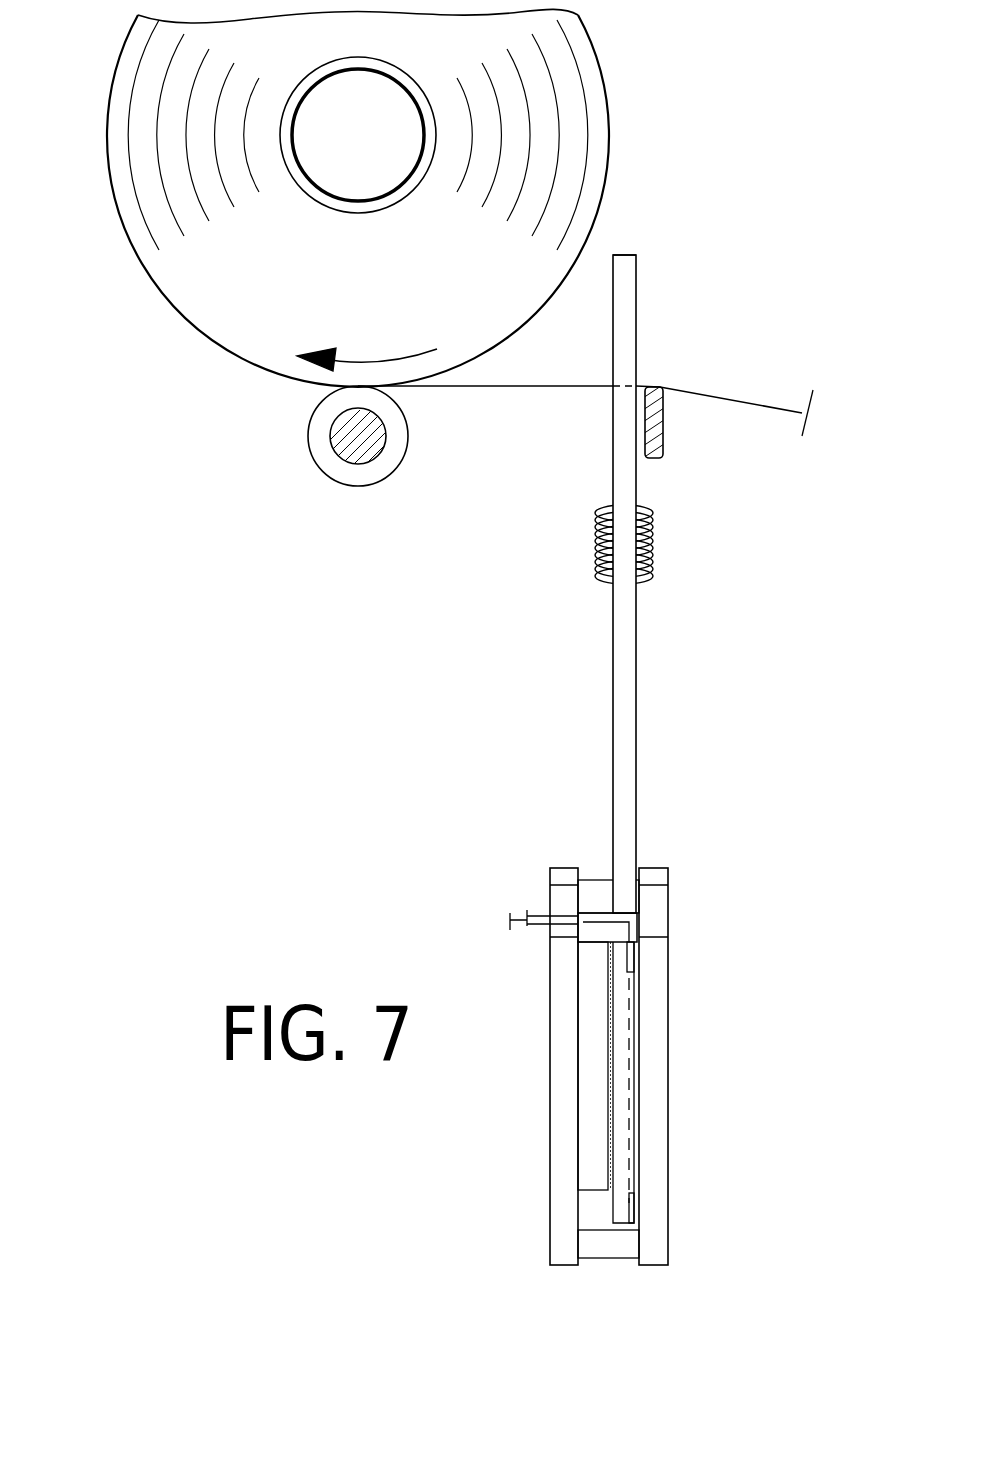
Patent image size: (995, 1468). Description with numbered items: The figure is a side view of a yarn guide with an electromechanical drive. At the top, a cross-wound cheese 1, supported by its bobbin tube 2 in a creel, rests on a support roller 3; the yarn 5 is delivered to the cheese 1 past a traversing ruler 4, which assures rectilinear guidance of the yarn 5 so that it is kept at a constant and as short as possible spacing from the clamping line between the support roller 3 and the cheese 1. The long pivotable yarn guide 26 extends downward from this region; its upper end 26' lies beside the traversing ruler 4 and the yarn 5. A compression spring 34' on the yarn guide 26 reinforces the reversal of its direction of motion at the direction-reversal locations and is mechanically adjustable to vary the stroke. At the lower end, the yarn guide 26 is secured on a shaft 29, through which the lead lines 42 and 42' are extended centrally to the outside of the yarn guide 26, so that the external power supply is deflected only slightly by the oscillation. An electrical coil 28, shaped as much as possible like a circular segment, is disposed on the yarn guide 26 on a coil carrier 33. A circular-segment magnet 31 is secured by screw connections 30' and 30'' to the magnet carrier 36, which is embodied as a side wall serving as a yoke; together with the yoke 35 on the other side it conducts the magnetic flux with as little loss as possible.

The cheese 1 is at (568, 125).
The bobbin tube 2 is at (372, 156).
The support roller 3 is at (380, 467).
The traversing ruler 4 is at (653, 413).
The yarn 5 is at (750, 403).
The yarn guide 26 is at (698, 584).
The upper end of slide bar 26' is at (672, 285).
The compression spring 34' is at (675, 544).
The screw connection 30'' is at (596, 850).
The lead line 42 is at (540, 885).
The lead line 42' is at (501, 948).
The shaft 29 is at (600, 933).
The magnet 31 is at (600, 1080).
The coil carrier 33 is at (620, 1072).
The electrical coil 28 is at (632, 958).
The yoke 35 is at (657, 1228).
The magnet carrier 36 is at (562, 1247).
The screw connection 30' is at (635, 1287).